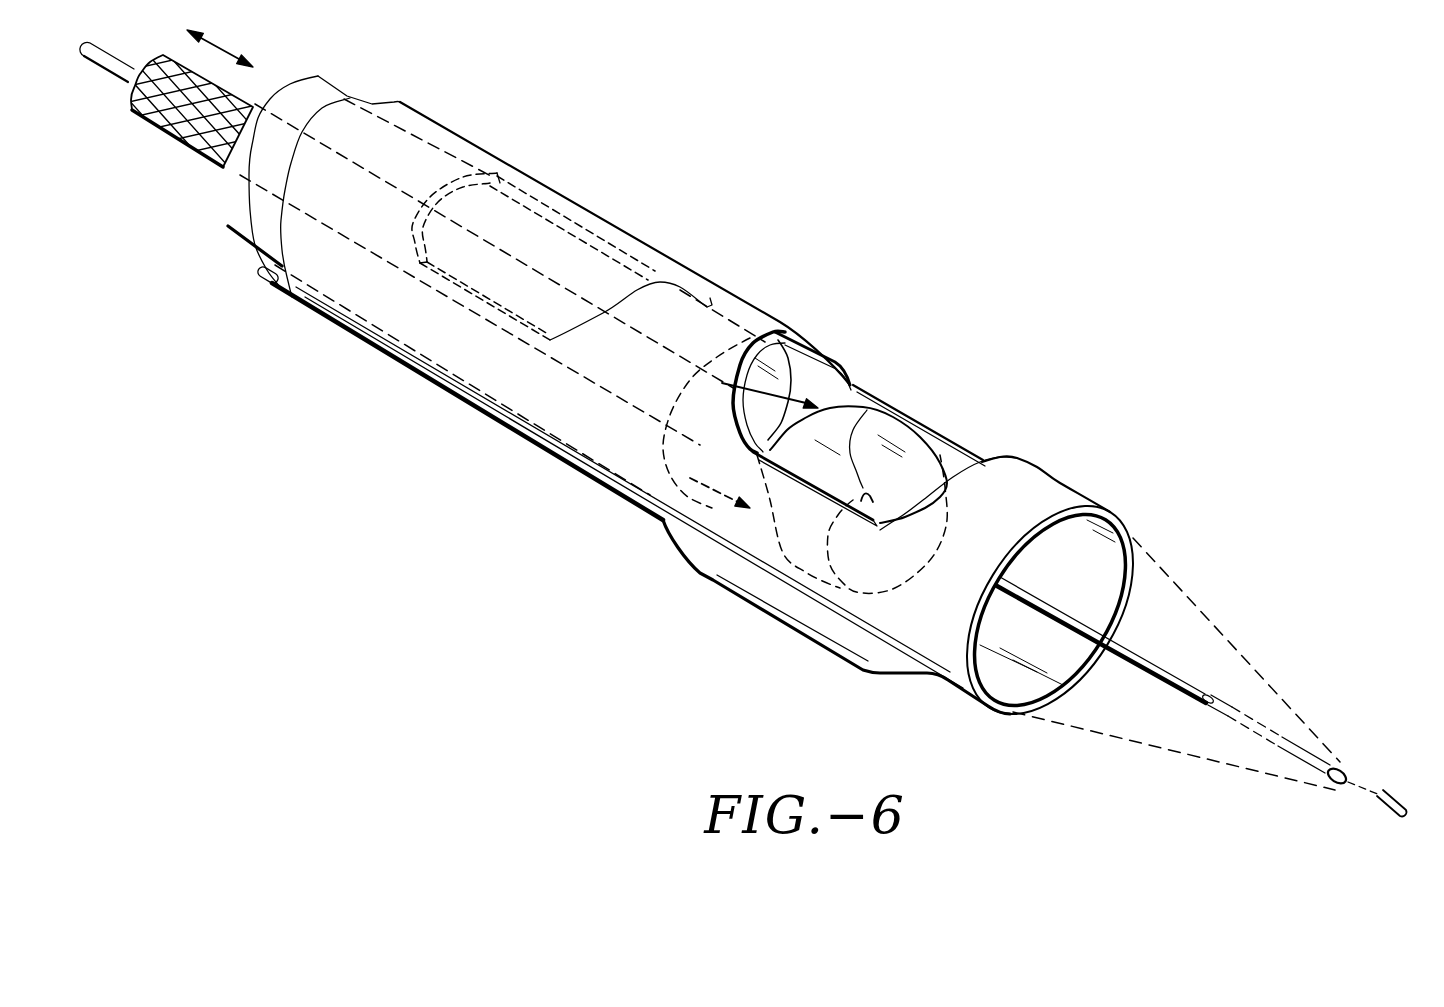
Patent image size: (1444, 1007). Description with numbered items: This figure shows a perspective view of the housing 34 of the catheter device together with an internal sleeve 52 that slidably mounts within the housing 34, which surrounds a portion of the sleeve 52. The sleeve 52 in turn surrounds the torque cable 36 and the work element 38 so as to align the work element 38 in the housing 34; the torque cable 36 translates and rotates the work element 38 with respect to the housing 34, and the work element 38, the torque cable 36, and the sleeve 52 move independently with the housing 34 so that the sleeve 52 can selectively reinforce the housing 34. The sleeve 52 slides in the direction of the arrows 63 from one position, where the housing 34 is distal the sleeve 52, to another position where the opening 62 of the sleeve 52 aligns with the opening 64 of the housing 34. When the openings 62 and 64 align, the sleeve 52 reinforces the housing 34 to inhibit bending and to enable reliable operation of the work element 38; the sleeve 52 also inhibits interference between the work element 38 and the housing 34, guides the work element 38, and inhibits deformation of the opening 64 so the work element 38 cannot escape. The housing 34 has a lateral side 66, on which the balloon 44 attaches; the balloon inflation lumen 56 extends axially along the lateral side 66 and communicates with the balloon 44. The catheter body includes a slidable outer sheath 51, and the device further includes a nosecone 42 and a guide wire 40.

The housing 34 is at (454, 129).
The torque cable 36 is at (180, 127).
The work element 38 is at (888, 428).
The guide wire 40 is at (1151, 664).
The nosecone 42 is at (1281, 693).
The balloon 44 is at (787, 604).
The slidable outer sheath 51 is at (304, 82).
The internal sleeve 52 is at (354, 103).
The balloon inflation lumen 56 is at (270, 282).
The opening of the sleeve 62 is at (505, 178).
The arrows 63 is at (787, 405).
The opening of the housing 64 is at (835, 363).
The lateral side 66 is at (604, 482).